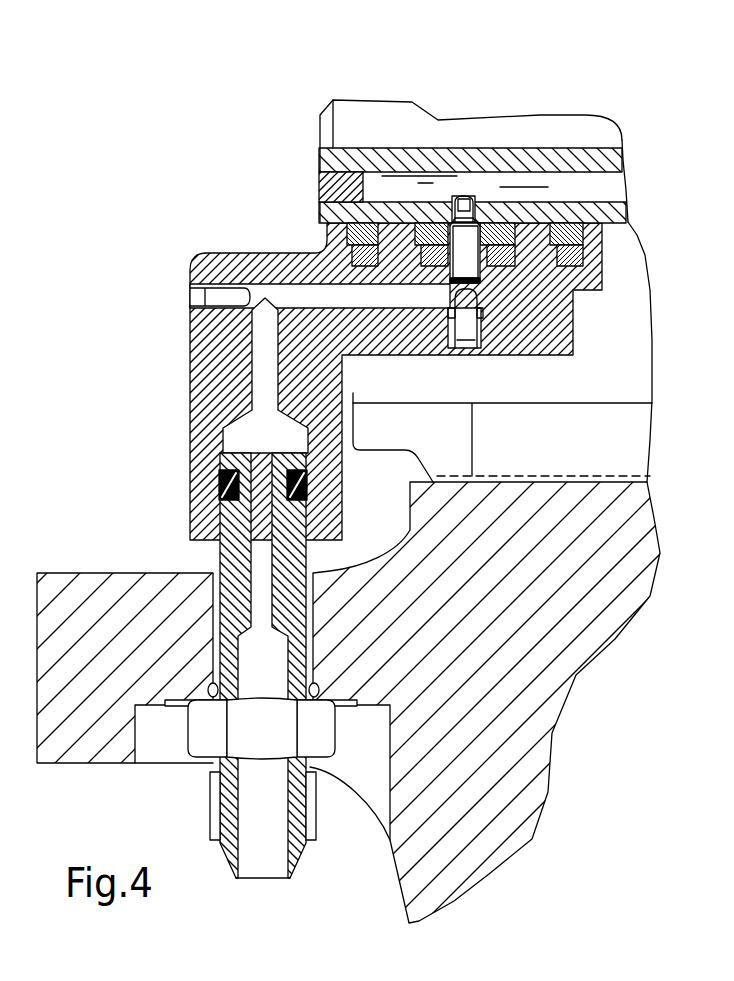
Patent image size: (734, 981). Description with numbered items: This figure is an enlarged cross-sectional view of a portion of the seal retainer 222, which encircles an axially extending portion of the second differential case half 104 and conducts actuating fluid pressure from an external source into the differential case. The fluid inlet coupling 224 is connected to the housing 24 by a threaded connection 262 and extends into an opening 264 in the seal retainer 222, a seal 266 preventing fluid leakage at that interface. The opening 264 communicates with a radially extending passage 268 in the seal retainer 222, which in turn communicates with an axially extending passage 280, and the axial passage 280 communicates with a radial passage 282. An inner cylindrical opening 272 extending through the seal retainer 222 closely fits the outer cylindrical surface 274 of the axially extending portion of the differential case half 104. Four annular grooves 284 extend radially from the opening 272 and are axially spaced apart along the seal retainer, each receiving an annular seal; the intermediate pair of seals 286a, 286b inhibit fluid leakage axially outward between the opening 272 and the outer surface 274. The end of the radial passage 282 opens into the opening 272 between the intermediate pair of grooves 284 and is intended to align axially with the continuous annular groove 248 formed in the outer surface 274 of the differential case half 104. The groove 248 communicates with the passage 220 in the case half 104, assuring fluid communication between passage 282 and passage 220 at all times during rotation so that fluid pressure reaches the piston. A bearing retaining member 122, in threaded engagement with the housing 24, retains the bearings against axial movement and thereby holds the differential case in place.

The housing 24 is at (501, 792).
The second differential case half 104 is at (362, 118).
The bearing retaining member 122 is at (622, 436).
The passage 220 is at (568, 172).
The seal retainer 222 is at (207, 383).
The fluid inlet coupling 224 is at (293, 847).
The annular groove 248 is at (465, 198).
The threaded connection 262 is at (213, 615).
The opening 264 is at (190, 449).
The seal 266 is at (195, 488).
The radially extending passage 268 is at (250, 342).
The inner cylindrical opening 272 is at (533, 223).
The outer cylindrical surface 274 is at (597, 217).
The axially extending passage 280 is at (270, 283).
The radial passage 282 is at (573, 237).
The annular grooves 284 is at (400, 290).
The intermediate seal 286a is at (433, 226).
The intermediate seal 286b is at (520, 275).